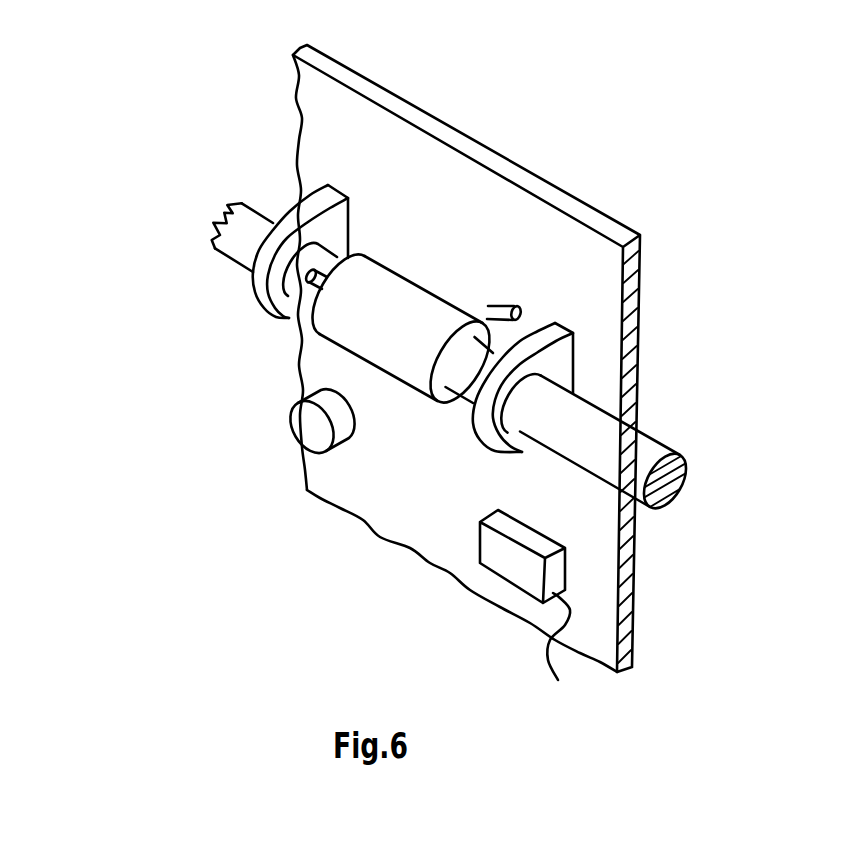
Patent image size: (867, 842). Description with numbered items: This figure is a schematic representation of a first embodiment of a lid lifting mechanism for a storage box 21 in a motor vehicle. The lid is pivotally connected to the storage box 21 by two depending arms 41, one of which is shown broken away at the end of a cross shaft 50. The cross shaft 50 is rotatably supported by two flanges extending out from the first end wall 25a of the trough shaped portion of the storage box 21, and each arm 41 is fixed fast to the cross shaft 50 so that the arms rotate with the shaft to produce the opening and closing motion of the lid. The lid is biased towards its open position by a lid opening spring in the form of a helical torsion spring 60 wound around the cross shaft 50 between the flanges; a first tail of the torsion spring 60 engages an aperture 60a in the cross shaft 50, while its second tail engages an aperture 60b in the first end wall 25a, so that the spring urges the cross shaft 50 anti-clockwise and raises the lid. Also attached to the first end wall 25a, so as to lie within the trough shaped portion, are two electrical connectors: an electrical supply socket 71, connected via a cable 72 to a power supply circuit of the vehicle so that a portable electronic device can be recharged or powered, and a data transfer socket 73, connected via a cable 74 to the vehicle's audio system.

The storage box 21 is at (425, 108).
The first end wall 25a is at (318, 124).
The depending arms 41 is at (165, 435).
The cross shaft 50 is at (660, 510).
The helical torsion spring 60 is at (413, 393).
The aperture in the cross shaft 60a is at (307, 278).
The aperture in the first end wall 60b is at (508, 308).
The electrical supply socket 71 is at (317, 452).
The cable 72 is at (305, 425).
The data transfer socket 73 is at (512, 578).
The cable 74 is at (563, 654).